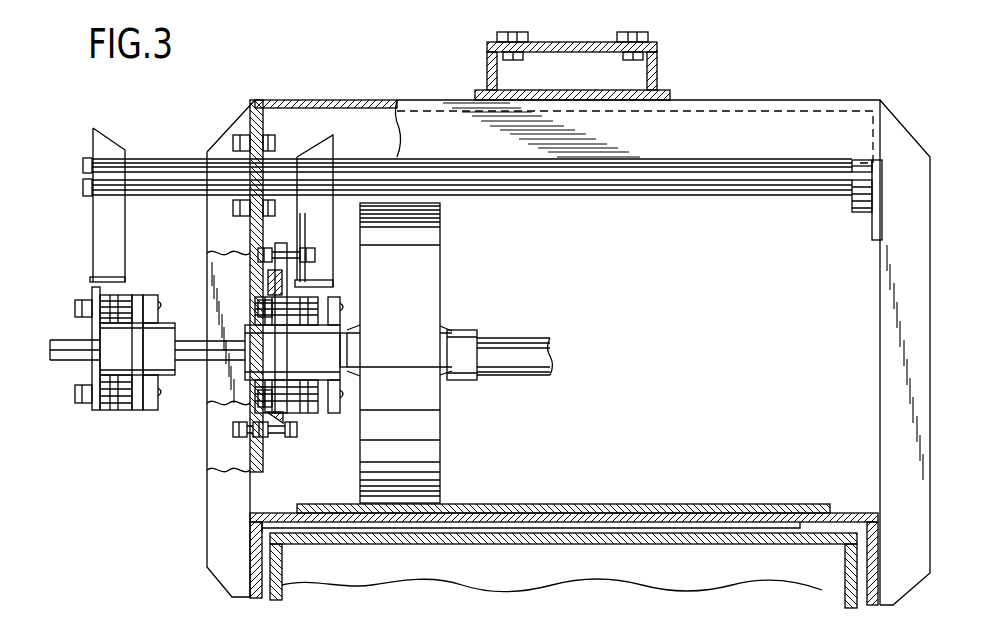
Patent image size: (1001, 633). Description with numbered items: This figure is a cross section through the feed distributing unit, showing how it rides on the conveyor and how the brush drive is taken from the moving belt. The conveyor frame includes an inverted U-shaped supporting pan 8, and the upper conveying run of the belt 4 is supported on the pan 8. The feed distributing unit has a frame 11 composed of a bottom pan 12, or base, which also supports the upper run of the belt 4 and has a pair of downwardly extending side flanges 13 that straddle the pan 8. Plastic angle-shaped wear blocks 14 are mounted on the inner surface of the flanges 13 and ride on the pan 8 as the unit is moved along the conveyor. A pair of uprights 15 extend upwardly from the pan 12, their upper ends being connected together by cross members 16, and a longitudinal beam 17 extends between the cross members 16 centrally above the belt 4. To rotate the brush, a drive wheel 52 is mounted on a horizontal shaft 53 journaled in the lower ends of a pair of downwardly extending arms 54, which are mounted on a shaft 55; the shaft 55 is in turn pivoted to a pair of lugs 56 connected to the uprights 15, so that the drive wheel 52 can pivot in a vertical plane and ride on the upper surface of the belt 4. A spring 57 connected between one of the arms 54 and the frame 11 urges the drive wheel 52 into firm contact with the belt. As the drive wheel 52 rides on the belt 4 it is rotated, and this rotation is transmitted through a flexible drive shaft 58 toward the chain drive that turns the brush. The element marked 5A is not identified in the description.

The belt 4 is at (752, 505).
The supporting pan 8 is at (276, 567).
The frame 11 is at (200, 470).
The bottom pan 12 is at (773, 528).
The side flanges 13 is at (250, 553).
The wear blocks 14 is at (322, 528).
The uprights 15 is at (210, 435).
The cross members 16 is at (827, 125).
The longitudinal beam 17 is at (657, 65).
The drive wheel 52 is at (430, 283).
The horizontal shaft 53 is at (190, 343).
The arms 54 is at (318, 150).
The shaft 55 is at (183, 170).
The lugs 56 is at (258, 100).
The spring 57 is at (266, 283).
The flexible drive shaft 58 is at (530, 348).
The end support plate 5A is at (98, 222).